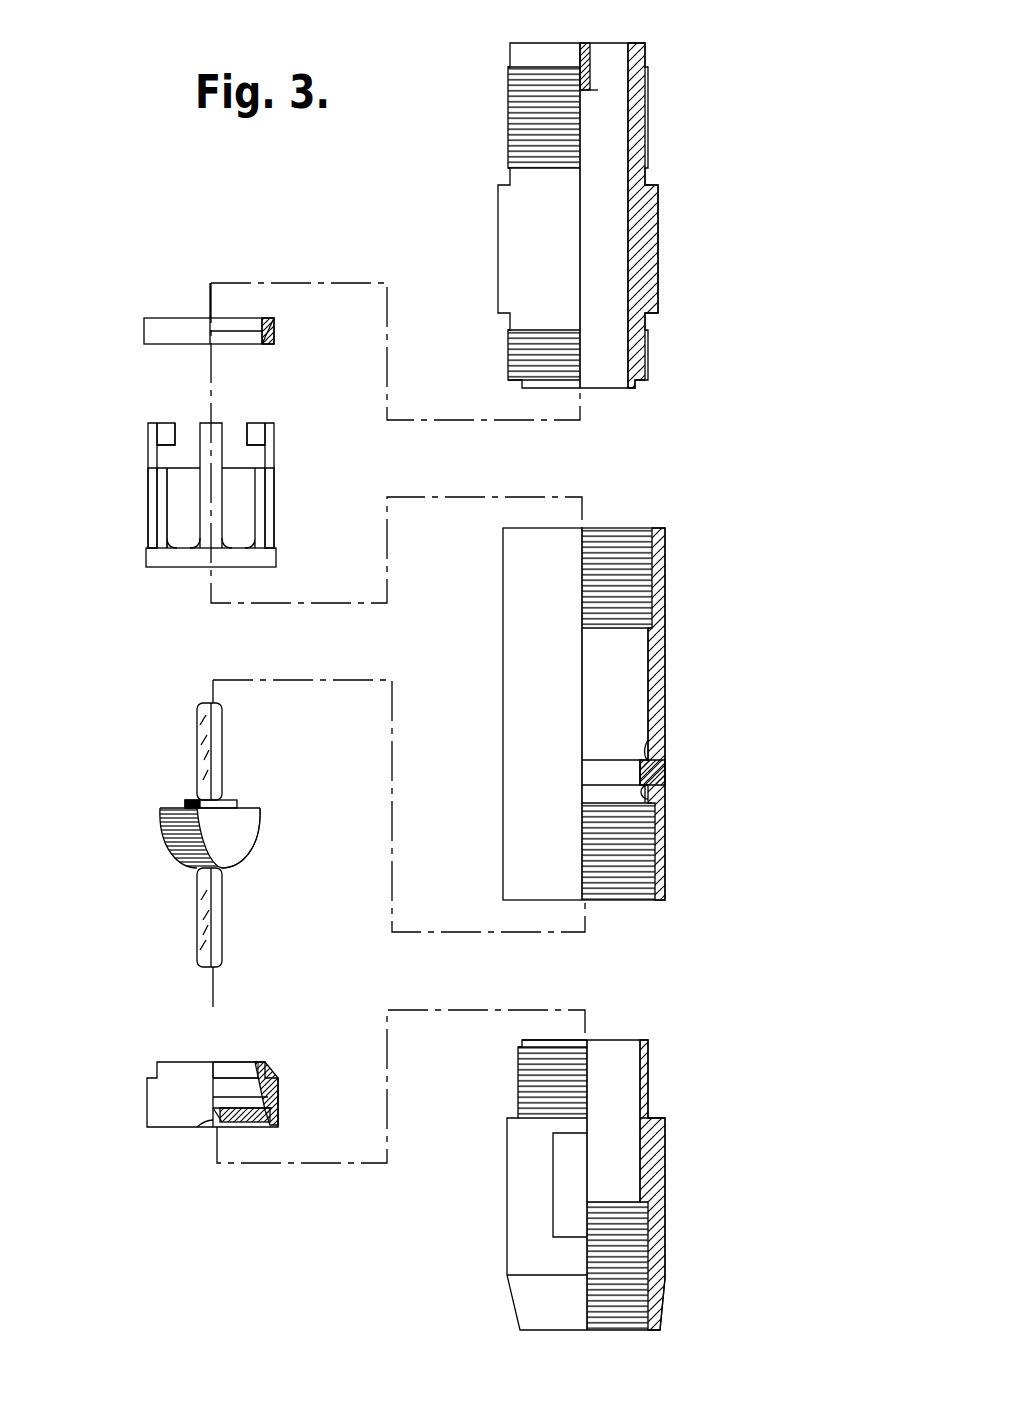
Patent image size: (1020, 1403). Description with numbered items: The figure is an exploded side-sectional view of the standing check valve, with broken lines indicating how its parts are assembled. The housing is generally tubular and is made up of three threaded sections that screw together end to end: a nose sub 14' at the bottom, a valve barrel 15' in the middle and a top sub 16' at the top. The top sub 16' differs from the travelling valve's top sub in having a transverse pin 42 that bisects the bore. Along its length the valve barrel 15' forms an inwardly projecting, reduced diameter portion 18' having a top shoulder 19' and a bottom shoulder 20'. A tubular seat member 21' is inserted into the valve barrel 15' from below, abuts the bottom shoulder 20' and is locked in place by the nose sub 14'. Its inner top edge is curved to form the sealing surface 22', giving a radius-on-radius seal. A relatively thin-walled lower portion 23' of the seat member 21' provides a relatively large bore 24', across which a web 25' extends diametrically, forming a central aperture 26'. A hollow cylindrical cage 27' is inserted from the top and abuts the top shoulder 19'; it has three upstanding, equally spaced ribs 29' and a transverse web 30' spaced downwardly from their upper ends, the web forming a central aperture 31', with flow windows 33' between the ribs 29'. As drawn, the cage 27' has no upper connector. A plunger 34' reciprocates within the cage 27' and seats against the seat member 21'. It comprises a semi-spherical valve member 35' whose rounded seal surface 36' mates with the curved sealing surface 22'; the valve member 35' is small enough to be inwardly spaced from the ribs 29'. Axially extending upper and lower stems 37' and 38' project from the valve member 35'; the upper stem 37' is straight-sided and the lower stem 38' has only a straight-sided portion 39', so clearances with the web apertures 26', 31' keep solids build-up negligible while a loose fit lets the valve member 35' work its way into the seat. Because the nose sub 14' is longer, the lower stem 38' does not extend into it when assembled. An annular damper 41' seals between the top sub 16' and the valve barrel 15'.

The nose sub 14' is at (551, 1185).
The valve barrel 15' is at (551, 714).
The top sub 16' is at (549, 215).
The reduced diameter portion 18' is at (687, 764).
The top shoulder 19' is at (689, 733).
The bottom shoulder 20' is at (687, 793).
The seat member 21' is at (173, 1094).
The sealing surface 22' is at (277, 1067).
The lower portion 23' is at (315, 1101).
The bore 24' is at (213, 1045).
The web 25' is at (275, 1133).
The central aperture 26' is at (184, 1149).
The cage 27' is at (299, 443).
The ribs 29' is at (218, 509).
The transverse web 30' is at (182, 492).
The central aperture 31' is at (167, 406).
The flow windows 33' is at (133, 508).
The plunger 34' is at (182, 843).
The valve member 35' is at (262, 812).
The seal surface 36' is at (276, 838).
The upper stem 37' is at (173, 751).
The lower stem 38' is at (170, 917).
The straight sided portion 39' is at (258, 917).
The annular damper 41' is at (197, 300).
The transverse pin 42 is at (590, 58).